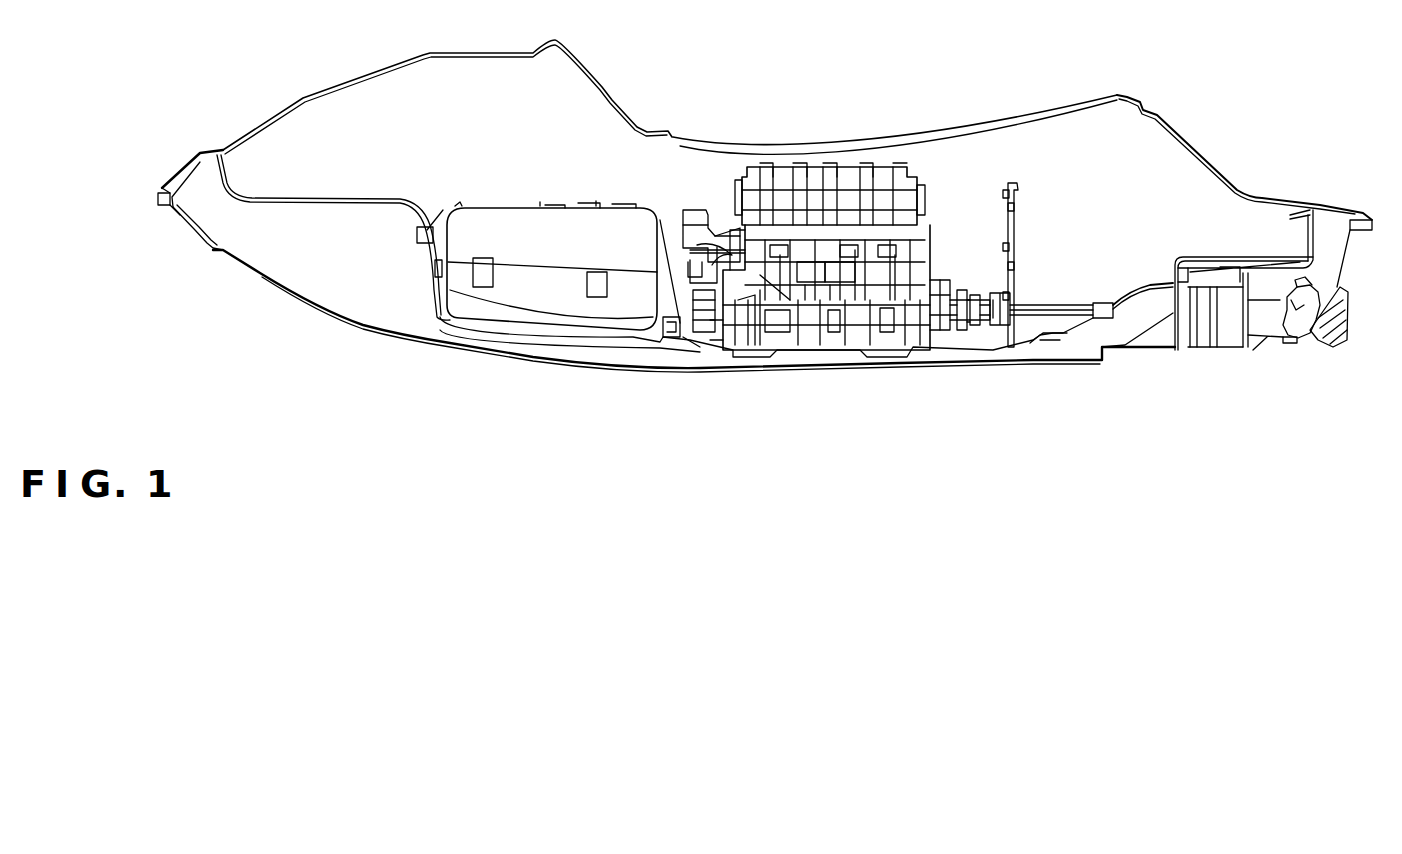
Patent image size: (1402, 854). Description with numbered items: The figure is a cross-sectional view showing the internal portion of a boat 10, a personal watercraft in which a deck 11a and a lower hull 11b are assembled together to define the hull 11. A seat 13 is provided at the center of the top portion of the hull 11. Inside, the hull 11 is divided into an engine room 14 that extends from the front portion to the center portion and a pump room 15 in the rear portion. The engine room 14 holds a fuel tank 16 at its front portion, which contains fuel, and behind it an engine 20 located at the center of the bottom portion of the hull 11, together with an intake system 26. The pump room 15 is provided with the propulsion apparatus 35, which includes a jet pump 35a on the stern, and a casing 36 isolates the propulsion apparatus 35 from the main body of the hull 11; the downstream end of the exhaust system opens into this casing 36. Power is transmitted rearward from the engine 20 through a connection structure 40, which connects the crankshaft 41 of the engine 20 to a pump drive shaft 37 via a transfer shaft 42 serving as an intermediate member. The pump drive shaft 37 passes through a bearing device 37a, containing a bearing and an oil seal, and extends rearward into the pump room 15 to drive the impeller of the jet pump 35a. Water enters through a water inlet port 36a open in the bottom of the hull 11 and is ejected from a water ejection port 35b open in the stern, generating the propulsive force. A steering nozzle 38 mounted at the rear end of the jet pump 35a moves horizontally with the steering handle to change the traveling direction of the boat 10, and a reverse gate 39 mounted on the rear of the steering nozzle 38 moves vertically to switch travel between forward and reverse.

The boat 10 is at (1142, 78).
The hull 11 is at (130, 113).
The deck 11a is at (245, 145).
The hull 11b is at (245, 262).
The seat 13 is at (947, 135).
The engine room 14 is at (690, 345).
The pump room 15 is at (1228, 265).
The fuel tank 16 is at (506, 220).
The engine 20 is at (928, 190).
The intake system 26 is at (683, 228).
The propulsion apparatus 35 is at (1247, 398).
The jet pump 35a is at (1215, 335).
The water ejection port 35b is at (1265, 337).
The casing 36 is at (1212, 254).
The water inlet port 36a is at (1060, 340).
The pump drive shaft 37 is at (1037, 300).
The bearing device 37a is at (1002, 292).
The steering nozzle 38 is at (1318, 347).
The reverse gate 39 is at (1343, 320).
The connection structure 40 is at (928, 270).
The crankshaft 41 is at (940, 330).
The transfer shaft 42 is at (970, 328).